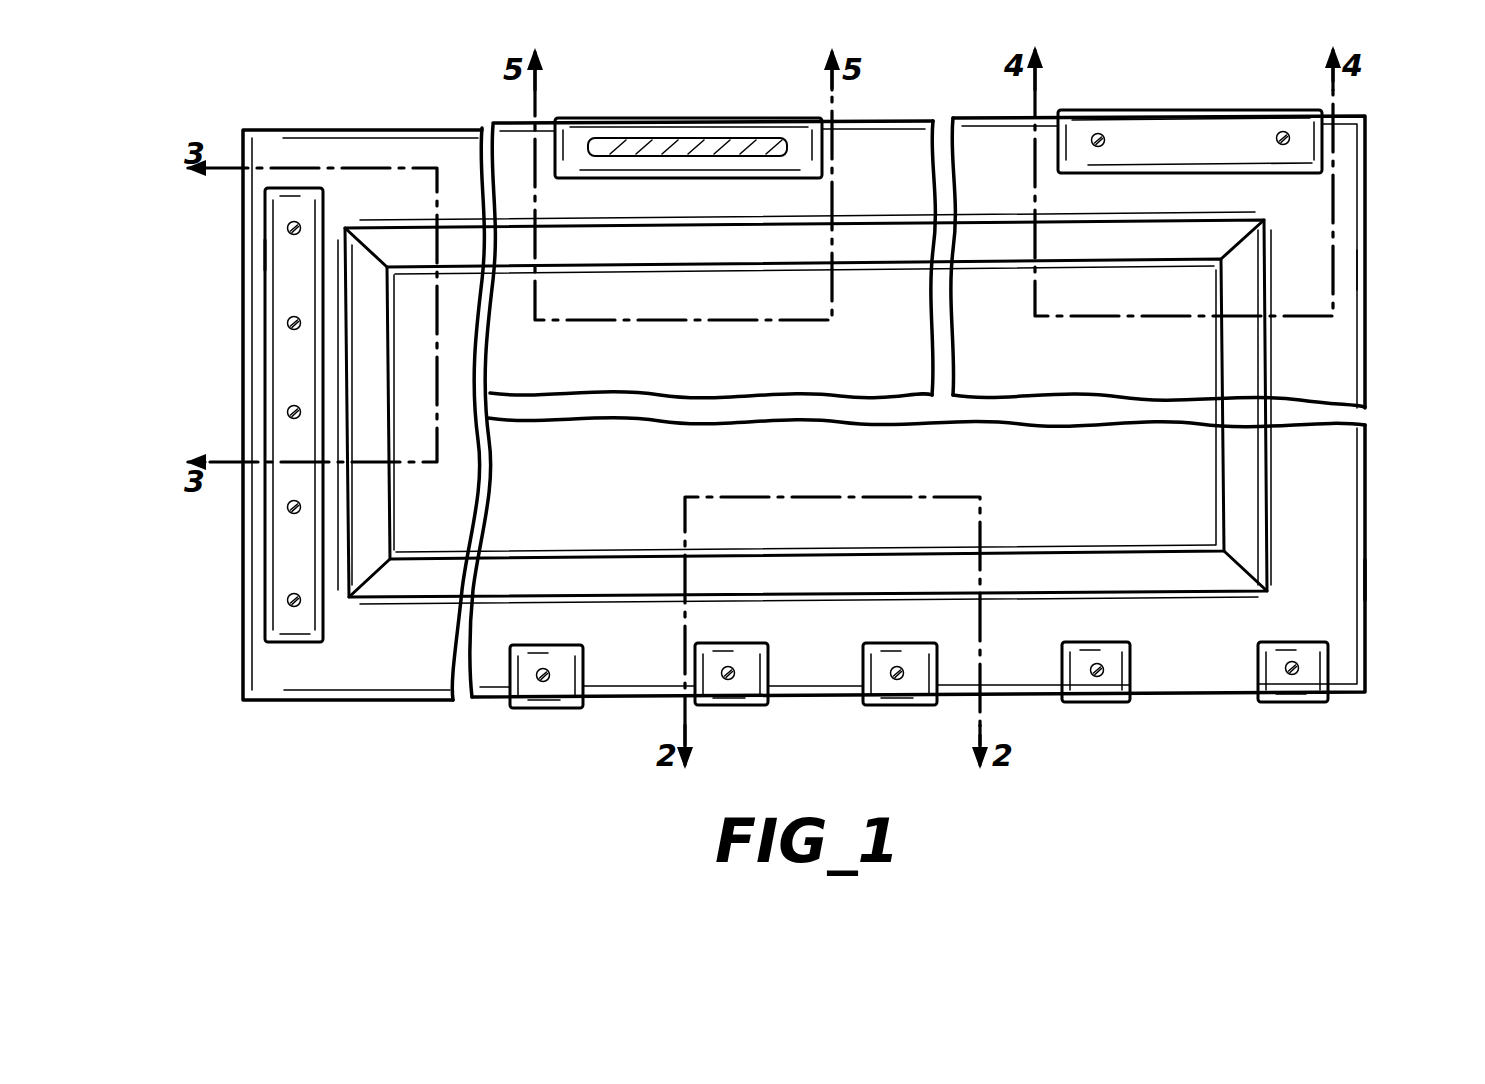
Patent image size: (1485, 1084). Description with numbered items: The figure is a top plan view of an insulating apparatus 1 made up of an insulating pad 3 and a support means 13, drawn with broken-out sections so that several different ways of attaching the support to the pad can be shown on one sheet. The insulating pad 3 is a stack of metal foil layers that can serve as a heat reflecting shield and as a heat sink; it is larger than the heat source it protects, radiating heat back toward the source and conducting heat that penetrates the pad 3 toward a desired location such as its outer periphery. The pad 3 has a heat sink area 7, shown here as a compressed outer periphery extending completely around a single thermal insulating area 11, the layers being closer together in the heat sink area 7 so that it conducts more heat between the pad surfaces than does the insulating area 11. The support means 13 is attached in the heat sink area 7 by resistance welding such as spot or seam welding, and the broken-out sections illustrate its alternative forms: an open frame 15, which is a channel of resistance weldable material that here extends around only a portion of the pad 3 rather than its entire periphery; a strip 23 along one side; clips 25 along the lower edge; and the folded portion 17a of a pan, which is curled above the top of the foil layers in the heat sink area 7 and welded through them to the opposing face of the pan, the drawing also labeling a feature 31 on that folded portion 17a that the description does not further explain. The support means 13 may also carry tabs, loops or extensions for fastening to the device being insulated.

The insulating apparatus 1 is at (1382, 579).
The insulating pad 3 is at (1366, 270).
The heat sink area 7 is at (1325, 366).
The thermal insulating area 11 is at (1170, 470).
The support means 13 is at (268, 256).
The open frame 15 is at (1222, 125).
The folded portion of pan 17a is at (688, 110).
The strip 23 is at (244, 415).
The clip 25 is at (895, 706).
The slot 31 is at (645, 140).